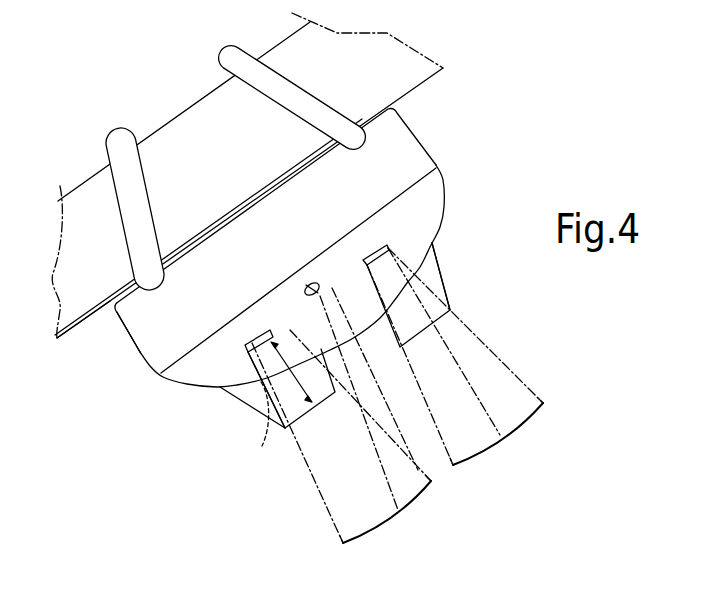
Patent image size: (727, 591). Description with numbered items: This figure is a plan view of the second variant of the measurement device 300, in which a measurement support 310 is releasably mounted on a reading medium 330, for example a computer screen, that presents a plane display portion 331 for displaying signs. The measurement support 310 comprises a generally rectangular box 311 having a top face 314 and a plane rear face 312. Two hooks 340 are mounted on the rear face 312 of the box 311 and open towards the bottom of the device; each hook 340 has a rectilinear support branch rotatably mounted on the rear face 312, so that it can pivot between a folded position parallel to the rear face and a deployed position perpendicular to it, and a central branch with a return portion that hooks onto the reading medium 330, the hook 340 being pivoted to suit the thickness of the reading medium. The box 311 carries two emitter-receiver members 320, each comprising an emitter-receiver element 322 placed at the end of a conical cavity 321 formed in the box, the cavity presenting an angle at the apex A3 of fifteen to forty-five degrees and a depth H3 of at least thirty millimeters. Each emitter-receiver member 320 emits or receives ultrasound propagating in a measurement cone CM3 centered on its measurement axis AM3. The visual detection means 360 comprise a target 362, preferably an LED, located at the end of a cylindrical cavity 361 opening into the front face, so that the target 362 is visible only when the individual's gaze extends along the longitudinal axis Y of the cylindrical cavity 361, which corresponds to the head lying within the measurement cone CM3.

The measurement device 300 is at (151, 440).
The measurement support 310 is at (405, 142).
The box 311 is at (145, 352).
The rear face 312 is at (264, 192).
The top face 314 is at (420, 168).
The emitter-receiver member 320 is at (451, 299).
The cavity 321 is at (440, 292).
The emitter-receiver element 322 is at (378, 241).
The reading medium 330 is at (97, 228).
The plane display portion 331 is at (80, 323).
The hook 340 is at (118, 130).
The rotation axis indicator 360 is at (331, 291).
The cylindrical cavity 361 is at (303, 295).
The target 362 is at (310, 281).
The measurement cone CM3 is at (520, 381).
The measurement axis AM3 is at (507, 413).
The angle at the apex A3 is at (498, 448).
The depth H3 is at (269, 405).
The longitudinal axis Y is at (391, 403).